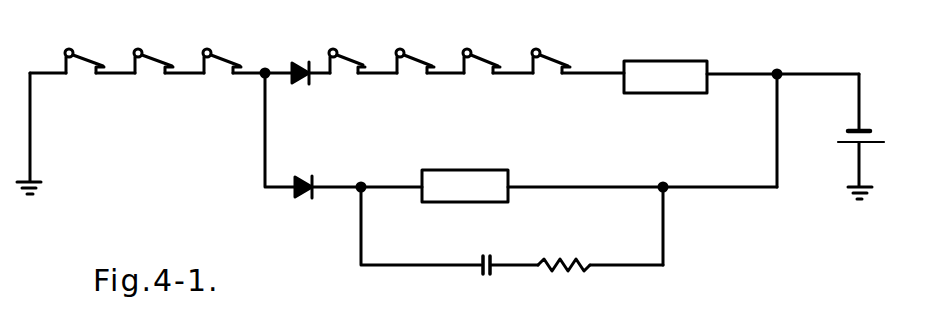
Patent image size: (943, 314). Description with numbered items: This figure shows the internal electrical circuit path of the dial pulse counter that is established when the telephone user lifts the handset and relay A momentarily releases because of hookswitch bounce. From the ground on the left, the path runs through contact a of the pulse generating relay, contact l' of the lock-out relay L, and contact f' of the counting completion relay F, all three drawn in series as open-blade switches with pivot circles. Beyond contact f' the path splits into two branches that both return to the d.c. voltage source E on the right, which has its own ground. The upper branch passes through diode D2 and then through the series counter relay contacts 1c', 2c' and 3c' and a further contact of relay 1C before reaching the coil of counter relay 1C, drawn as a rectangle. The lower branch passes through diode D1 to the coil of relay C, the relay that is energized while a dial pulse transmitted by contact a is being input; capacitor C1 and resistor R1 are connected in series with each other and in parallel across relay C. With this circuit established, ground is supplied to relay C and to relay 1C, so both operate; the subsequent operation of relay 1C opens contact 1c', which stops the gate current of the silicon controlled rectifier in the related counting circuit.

The contact a is at (100, 49).
The lock-out relay contact l1 l' is at (169, 49).
The counting completion relay contact f f' is at (234, 50).
The diode D2 is at (307, 58).
The counter relay contact 1C1 1c' is at (363, 50).
The counter relay contact 2C1 2c' is at (430, 49).
The counter relay contact 3C1 3c' is at (498, 49).
The counter relay coil 1C is at (741, 77).
The d.c. voltage source E is at (869, 136).
The diode D1 is at (326, 173).
The relay C is at (542, 186).
The capacitor C1 is at (504, 253).
The resistor R1 is at (600, 252).